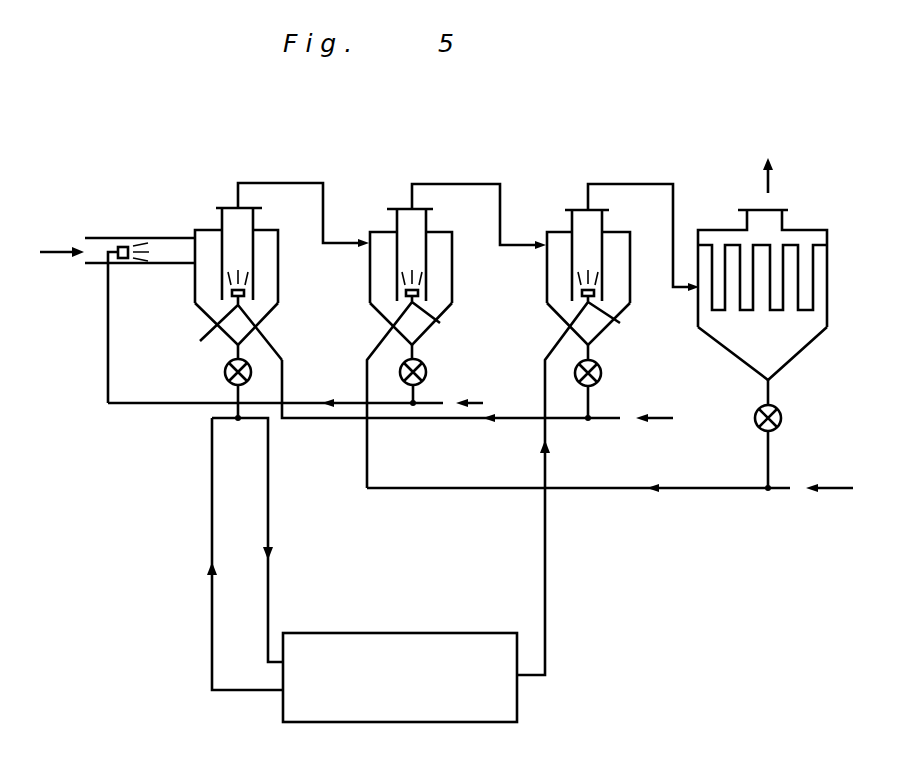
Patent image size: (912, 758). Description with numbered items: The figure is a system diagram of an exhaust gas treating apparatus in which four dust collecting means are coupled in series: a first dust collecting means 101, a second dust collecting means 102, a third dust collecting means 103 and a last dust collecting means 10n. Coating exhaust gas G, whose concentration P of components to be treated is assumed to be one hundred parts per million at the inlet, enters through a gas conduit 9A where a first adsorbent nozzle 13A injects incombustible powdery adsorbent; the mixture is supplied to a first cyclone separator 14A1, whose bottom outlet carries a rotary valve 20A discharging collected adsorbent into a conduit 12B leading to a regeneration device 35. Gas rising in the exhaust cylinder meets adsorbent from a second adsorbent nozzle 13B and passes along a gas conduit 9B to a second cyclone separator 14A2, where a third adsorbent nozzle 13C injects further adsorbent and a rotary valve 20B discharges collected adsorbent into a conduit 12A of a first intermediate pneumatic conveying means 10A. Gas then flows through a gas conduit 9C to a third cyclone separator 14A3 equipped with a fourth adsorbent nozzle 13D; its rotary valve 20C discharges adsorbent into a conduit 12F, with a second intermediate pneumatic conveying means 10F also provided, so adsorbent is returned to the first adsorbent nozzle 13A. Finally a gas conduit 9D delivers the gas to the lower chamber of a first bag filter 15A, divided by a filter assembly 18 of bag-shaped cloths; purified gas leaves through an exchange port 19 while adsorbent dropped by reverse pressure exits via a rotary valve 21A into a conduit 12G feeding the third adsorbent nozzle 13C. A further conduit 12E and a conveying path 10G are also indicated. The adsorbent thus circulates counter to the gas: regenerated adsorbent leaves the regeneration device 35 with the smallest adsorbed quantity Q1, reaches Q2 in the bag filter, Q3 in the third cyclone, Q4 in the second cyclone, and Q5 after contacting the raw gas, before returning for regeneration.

The first dust collecting means 101 is at (178, 200).
The second dust collecting means 102 is at (356, 200).
The third dust collecting means 103 is at (534, 200).
The last dust collecting means 10n is at (713, 200).
The gas conduit 9A is at (163, 265).
The gas conduit 9B is at (277, 183).
The gas conduit 9C is at (463, 184).
The gas conduit 9D is at (640, 184).
The first adsorbent nozzle 13A is at (124, 246).
The second adsorbent nozzle 13B is at (200, 341).
The third adsorbent nozzle 13C is at (403, 293).
The fourth adsorbent nozzle 13D is at (583, 293).
The first cyclone separator 14A1 is at (209, 230).
The second cyclone separator 14A2 is at (378, 232).
The third cyclone separator 14A3 is at (555, 232).
The first bag filter 15A is at (810, 230).
The filter assembly 18 is at (772, 312).
The exchange port 19 is at (776, 210).
The rotary valve 20A is at (225, 375).
The rotary valve 20B is at (425, 367).
The rotary valve 20C is at (602, 373).
The rotary valve 21A is at (781, 416).
The conduit 12A is at (108, 350).
The conduit 12B is at (210, 580).
The recycle duct 12E is at (547, 575).
The conduit 12F is at (308, 420).
The conduit 12G is at (405, 488).
The first intermediate pneumatic conveying means 10A is at (154, 420).
The intermediate pneumatic conveying means 10F is at (347, 430).
The recycle flow 10G is at (499, 493).
The regeneration device 35 is at (507, 693).
The exhaust gas G is at (50, 248).
The concentration of gas components P is at (57, 279).
The adsorbed quantity Q1 is at (597, 310).
The adsorbed quantity Q2 is at (417, 308).
The adsorbed quantity Q3 is at (245, 311).
The adsorbed quantity Q4 is at (107, 287).
The adsorbed quantity Q5 is at (207, 312).